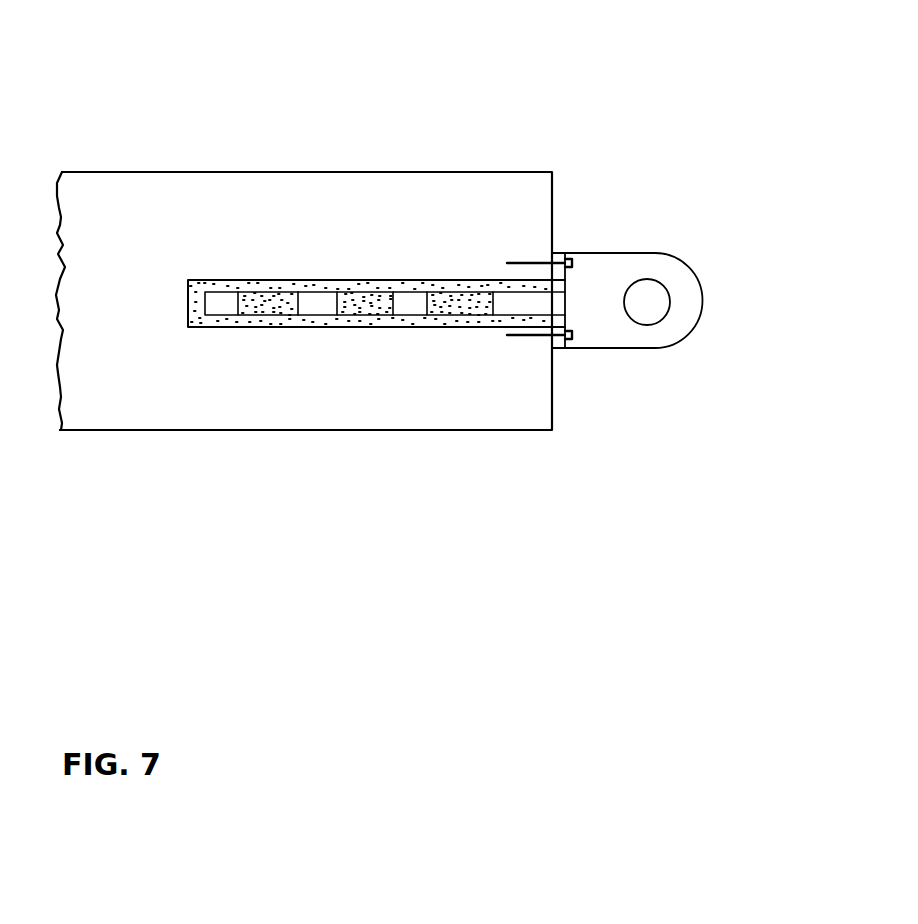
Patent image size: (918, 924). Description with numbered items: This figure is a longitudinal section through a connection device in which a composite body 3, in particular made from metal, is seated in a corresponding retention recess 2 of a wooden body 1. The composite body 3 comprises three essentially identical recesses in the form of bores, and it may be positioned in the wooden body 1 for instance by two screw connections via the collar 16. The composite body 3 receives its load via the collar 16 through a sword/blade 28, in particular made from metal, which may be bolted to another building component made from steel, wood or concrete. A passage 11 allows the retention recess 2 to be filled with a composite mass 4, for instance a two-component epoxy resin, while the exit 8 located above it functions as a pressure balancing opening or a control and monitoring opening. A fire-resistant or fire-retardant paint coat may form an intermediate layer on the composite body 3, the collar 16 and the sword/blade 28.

The wooden body 1 is at (318, 125).
The retention recess 2 is at (198, 327).
The composite body 3 is at (233, 315).
The composite mass 4 is at (373, 315).
The exit 8 is at (565, 284).
The passage 11 is at (565, 317).
The collar 16 is at (592, 351).
The sword/blade 28 is at (610, 253).